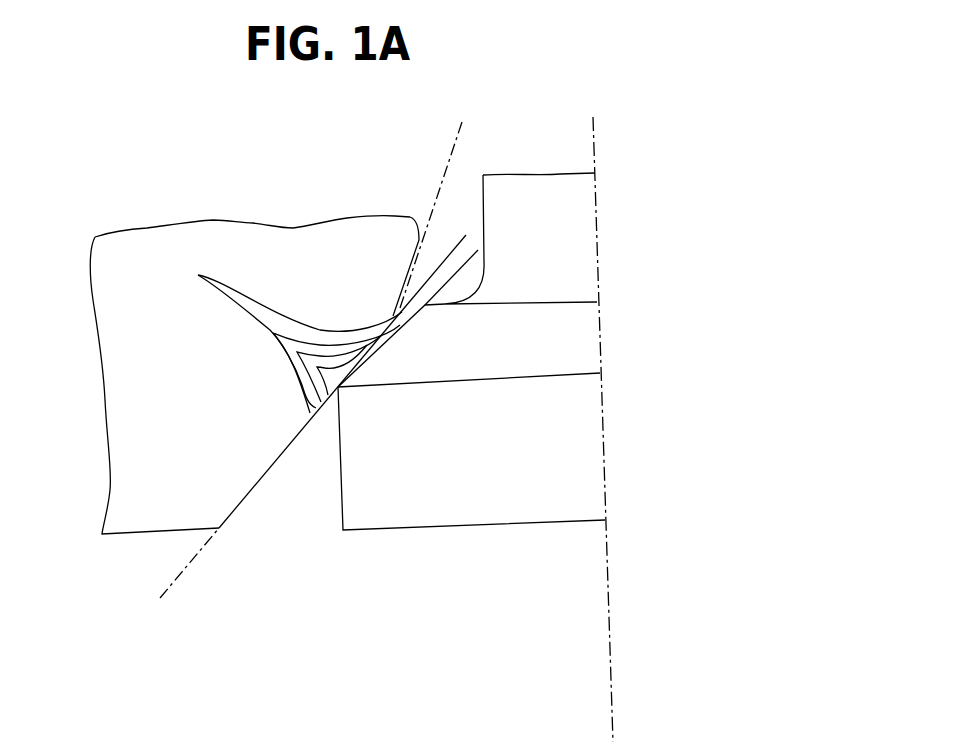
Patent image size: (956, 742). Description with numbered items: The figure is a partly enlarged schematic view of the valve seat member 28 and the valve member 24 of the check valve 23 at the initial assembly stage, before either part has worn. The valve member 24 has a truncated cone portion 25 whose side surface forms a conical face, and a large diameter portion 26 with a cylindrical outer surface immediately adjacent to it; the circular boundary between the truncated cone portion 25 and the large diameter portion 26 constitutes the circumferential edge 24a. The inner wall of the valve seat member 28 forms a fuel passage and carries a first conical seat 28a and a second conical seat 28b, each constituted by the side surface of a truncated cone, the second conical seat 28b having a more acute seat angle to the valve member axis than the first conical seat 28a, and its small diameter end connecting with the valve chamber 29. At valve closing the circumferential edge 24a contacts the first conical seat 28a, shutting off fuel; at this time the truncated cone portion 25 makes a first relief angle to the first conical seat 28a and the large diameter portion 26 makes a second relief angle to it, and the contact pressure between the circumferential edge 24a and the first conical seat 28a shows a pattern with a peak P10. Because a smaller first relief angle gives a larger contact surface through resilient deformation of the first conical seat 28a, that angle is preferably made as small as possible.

The valve seat member 28 is at (150, 250).
The first conical seat 28a is at (300, 437).
The second conical seat 28b is at (410, 281).
The valve chamber 29 is at (430, 253).
The peak P10 is at (236, 284).
The check valve 23 is at (600, 253).
The valve member 24 is at (594, 278).
The circumferential edge 24a is at (543, 376).
The truncated cone portion 25 is at (587, 355).
The large diameter portion 26 is at (590, 498).